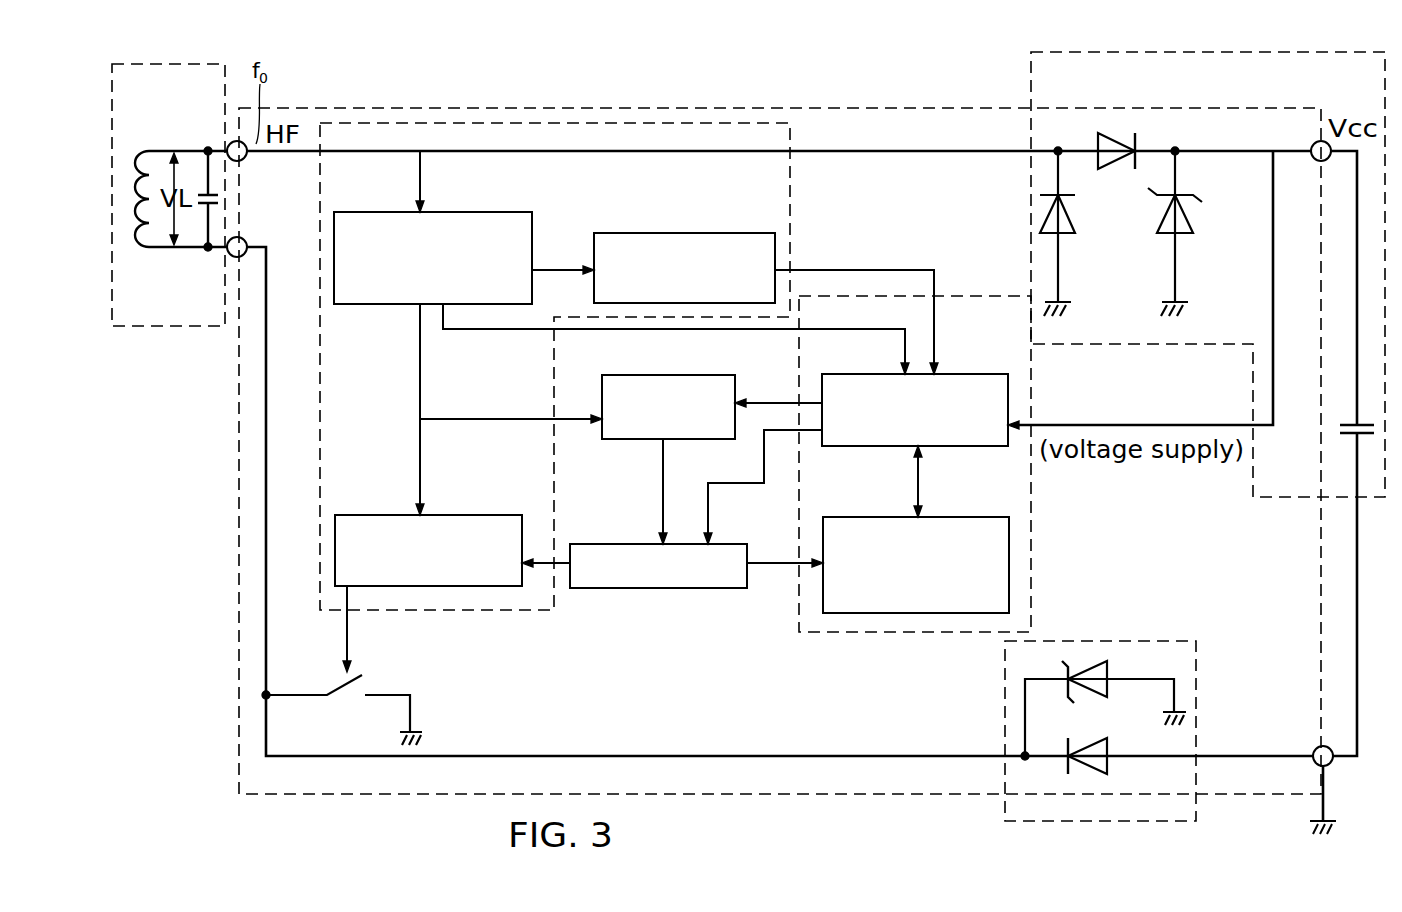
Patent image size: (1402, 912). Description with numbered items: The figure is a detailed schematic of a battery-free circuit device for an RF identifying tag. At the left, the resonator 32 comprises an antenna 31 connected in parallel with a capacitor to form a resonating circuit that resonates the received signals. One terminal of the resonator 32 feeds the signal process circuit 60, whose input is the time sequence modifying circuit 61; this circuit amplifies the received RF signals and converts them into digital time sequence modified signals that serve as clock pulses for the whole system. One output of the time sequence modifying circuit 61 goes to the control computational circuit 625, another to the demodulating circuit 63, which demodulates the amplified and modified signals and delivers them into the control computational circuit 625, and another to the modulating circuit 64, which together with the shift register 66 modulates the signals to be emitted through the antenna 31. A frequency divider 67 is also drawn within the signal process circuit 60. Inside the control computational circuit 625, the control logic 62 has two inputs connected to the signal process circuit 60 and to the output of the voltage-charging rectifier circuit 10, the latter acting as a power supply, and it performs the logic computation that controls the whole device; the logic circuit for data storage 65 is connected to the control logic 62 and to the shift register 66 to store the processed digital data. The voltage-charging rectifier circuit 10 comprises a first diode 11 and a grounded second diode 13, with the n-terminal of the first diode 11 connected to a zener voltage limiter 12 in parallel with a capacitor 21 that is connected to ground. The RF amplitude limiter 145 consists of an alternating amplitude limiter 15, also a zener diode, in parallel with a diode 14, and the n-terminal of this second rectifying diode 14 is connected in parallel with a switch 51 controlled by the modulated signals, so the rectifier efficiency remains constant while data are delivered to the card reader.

The voltage-charging rectifier circuit 10 is at (1048, 85).
The first diode 11 is at (1112, 132).
The voltage limiter 12 is at (1186, 213).
The second diode 13 is at (1070, 234).
The diode 14 is at (1095, 772).
The alternating amplitude limiter 15 is at (1098, 665).
The capacitor 21 is at (1341, 434).
The antenna 31 is at (150, 150).
The resonator 32 is at (157, 314).
The switch 51 is at (360, 675).
The signal process circuit 60 is at (330, 345).
The time sequence modifying circuit 61 is at (390, 222).
The control logic 62 is at (970, 387).
The demodulating circuit 63 is at (594, 268).
The modulating circuit 64 is at (383, 525).
The logic circuit for data storage 65 is at (1009, 552).
The shift register 66 is at (617, 583).
The frequency divider 67 is at (605, 395).
The RF amplitude limiter 145 is at (1197, 683).
The control computational circuit 625 is at (882, 628).